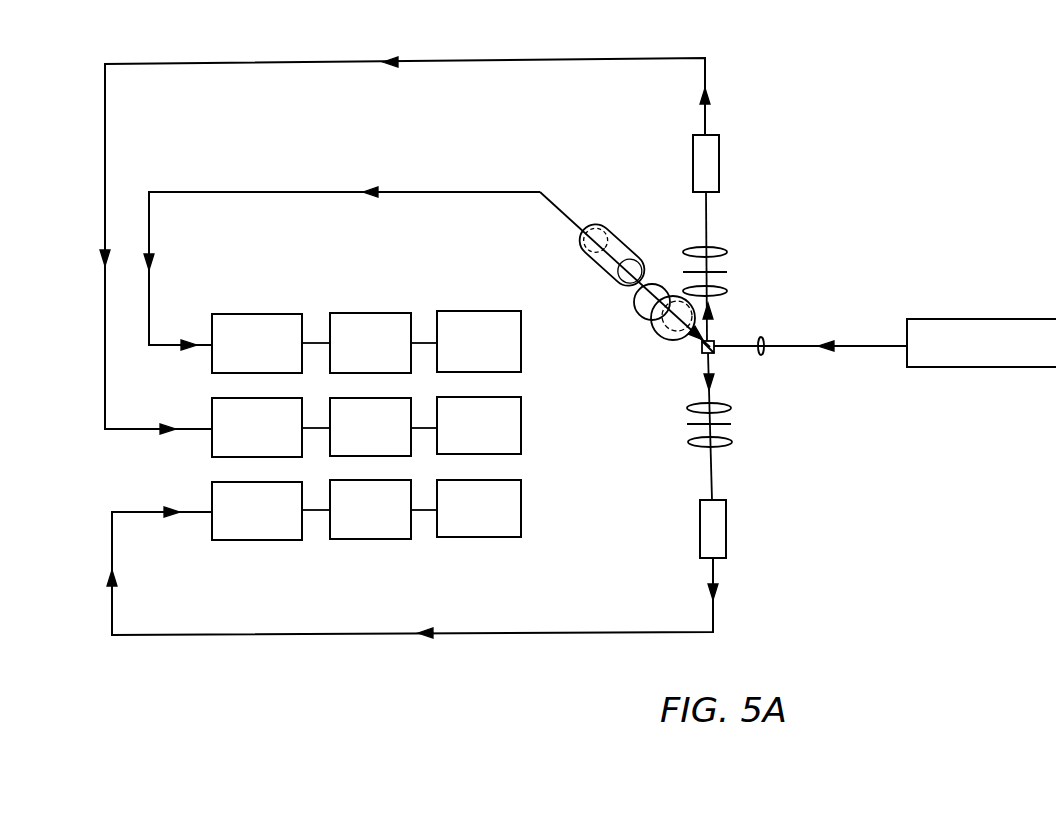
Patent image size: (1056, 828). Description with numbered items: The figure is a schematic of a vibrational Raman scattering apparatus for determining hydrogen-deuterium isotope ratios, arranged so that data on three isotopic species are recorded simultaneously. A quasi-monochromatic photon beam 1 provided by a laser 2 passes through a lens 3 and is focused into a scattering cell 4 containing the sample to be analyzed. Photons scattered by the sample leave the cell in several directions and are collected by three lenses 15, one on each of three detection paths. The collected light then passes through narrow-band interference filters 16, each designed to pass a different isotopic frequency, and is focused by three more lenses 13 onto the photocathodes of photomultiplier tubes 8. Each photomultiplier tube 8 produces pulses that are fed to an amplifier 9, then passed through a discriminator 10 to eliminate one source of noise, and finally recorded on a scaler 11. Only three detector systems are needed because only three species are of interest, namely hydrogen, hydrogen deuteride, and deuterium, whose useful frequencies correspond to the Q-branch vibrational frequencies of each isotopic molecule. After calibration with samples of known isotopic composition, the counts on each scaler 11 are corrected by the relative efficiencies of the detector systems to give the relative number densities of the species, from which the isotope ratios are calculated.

The quasi-monochromatic photon beam 1 is at (845, 346).
The laser 2 is at (990, 367).
The lens 3 is at (761, 352).
The scattering cell 4 is at (715, 349).
The photomultiplier tube 8 is at (719, 172).
The amplifier 9 is at (212, 358).
The discriminator 10 is at (411, 355).
The scaler 11 is at (521, 350).
The lens 13 is at (727, 252).
The lens 15 is at (727, 292).
The narrow-band interference filter 16 is at (727, 272).